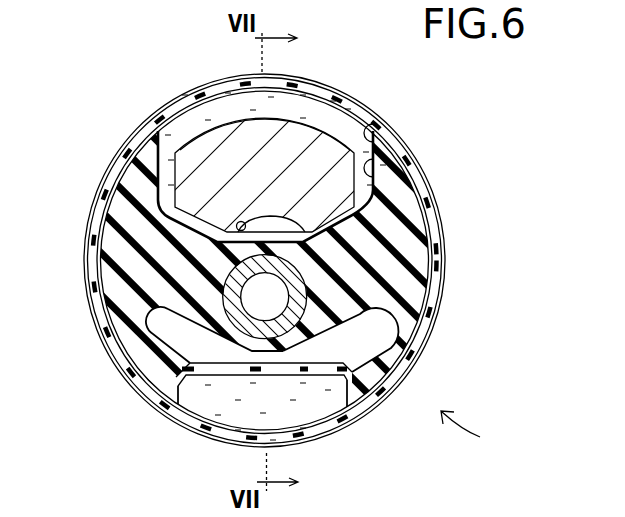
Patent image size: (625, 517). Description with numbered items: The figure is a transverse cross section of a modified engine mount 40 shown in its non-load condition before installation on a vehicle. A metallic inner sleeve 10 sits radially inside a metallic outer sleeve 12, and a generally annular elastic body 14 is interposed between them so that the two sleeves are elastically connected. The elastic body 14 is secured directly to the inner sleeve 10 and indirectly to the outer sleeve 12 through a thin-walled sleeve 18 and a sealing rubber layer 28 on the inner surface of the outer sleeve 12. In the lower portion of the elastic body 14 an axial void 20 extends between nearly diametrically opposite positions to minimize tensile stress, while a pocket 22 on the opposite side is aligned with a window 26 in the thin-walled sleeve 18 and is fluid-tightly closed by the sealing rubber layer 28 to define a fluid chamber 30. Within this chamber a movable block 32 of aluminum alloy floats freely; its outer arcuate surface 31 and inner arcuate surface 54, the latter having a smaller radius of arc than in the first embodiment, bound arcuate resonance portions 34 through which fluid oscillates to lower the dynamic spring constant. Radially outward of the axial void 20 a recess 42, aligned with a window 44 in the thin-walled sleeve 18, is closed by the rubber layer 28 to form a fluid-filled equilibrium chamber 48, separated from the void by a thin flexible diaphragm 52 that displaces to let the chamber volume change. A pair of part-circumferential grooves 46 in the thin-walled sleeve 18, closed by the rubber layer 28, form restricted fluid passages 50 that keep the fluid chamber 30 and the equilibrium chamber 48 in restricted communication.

The inner sleeve 10 is at (264, 331).
The outer sleeve 12 is at (105, 345).
The elastic body 14 is at (128, 241).
The thin-walled sleeve 18 is at (176, 377).
The axial void 20 is at (360, 360).
The pocket 22 is at (380, 177).
The window 26 is at (370, 137).
The sealing rubber layer 28 is at (310, 84).
The fluid chamber 30 is at (160, 117).
The outer arcuate surface 31 is at (250, 126).
The movable block 32 is at (318, 148).
The arcuate resonance portions 34 is at (246, 120).
The engine mount 40 is at (475, 434).
The recess 42 is at (323, 376).
The window 44 is at (183, 397).
The part-circumferential grooves 46 is at (112, 226).
The equilibrium chamber 48 is at (243, 428).
The restricted fluid passages 50 is at (100, 298).
The flexible diaphragm 52 is at (223, 369).
The inner arcuate surface 54 is at (238, 223).